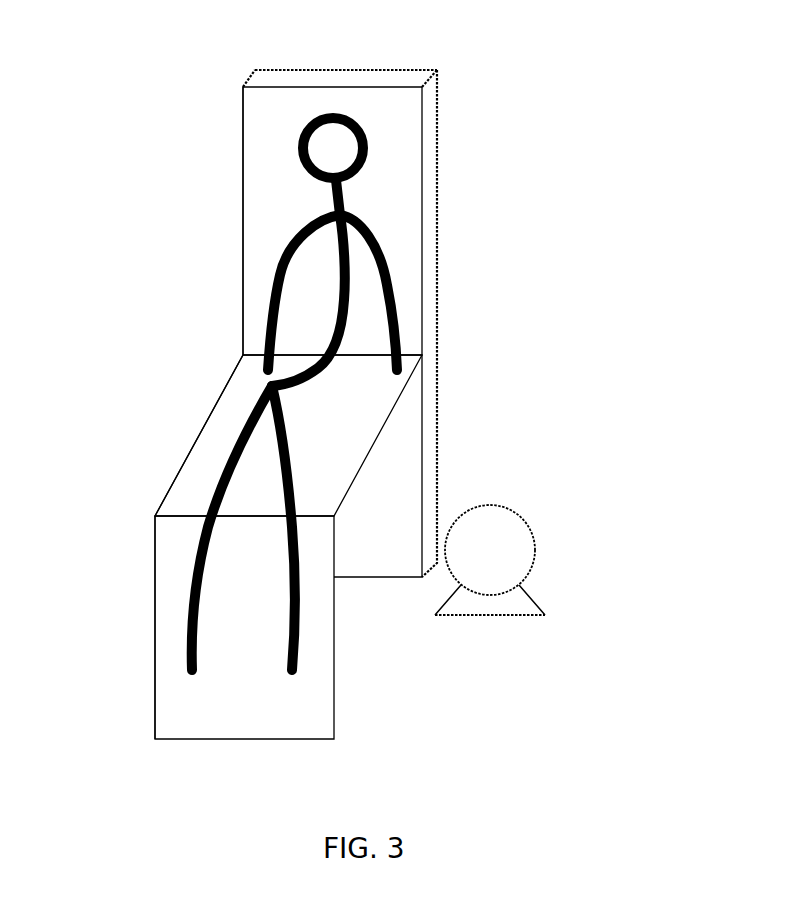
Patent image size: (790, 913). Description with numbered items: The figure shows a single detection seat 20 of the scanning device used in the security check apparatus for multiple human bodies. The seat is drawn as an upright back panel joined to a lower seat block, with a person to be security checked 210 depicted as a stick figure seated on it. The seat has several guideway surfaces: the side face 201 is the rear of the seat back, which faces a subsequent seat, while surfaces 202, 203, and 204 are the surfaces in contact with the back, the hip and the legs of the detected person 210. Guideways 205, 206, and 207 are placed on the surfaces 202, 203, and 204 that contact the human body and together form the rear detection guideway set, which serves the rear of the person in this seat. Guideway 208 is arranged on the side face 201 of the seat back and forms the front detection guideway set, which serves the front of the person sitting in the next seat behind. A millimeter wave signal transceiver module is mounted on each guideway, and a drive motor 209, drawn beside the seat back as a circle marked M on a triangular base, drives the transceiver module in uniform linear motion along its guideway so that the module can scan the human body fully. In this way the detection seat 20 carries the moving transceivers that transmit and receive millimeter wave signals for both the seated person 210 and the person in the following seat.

The detection seat 20 is at (350, 70).
The guideway surface 201 is at (423, 465).
The guideway surface 202 is at (393, 125).
The guideway surface 203 is at (235, 408).
The guideway surface 204 is at (232, 703).
The guideway 205 is at (242, 275).
The guideway 206 is at (168, 488).
The guideway 207 is at (155, 722).
The guideway 208 is at (438, 177).
The motor 209 is at (535, 550).
The person to be security checked 210 is at (393, 278).